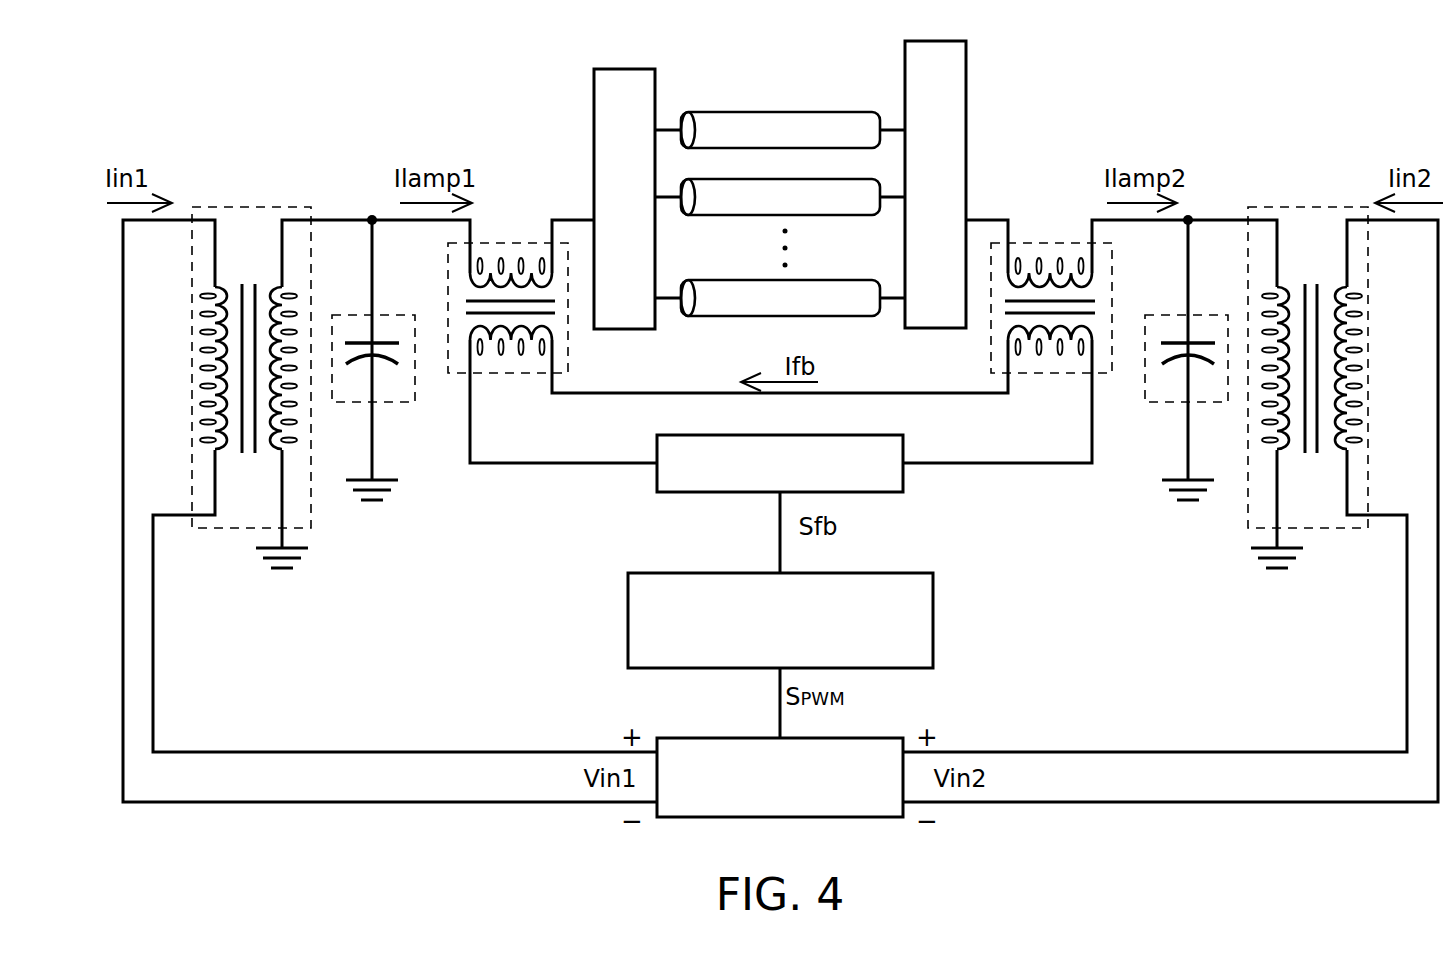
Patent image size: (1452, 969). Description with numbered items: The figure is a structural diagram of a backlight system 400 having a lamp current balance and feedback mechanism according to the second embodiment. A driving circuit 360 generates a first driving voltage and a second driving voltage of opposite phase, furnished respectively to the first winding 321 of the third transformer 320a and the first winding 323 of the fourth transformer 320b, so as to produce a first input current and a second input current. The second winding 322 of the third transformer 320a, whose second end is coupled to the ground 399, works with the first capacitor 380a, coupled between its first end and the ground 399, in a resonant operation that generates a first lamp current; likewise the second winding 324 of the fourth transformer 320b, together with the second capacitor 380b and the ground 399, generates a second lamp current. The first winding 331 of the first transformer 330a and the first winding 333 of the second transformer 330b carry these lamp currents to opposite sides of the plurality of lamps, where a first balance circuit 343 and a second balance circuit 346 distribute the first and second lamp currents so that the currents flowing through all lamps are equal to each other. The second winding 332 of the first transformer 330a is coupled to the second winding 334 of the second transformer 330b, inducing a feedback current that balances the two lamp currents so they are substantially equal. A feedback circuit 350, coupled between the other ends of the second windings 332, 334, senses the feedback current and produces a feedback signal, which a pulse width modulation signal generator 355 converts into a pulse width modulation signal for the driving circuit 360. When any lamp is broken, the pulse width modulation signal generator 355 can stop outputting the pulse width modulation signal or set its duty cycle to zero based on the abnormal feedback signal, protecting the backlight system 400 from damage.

The backlight system 400 is at (1222, 103).
The third transformer 320a is at (252, 351).
The fourth transformer 320b is at (1307, 349).
The first winding of third transformer 321 is at (213, 430).
The second winding of third transformer 322 is at (284, 430).
The first winding of fourth transformer 323 is at (1349, 430).
The second winding of fourth transformer 324 is at (1275, 430).
The first transformer 330a is at (544, 309).
The second transformer 330b is at (1015, 309).
The first winding of first transformer 331 is at (520, 258).
The second winding of first transformer 332 is at (520, 357).
The first winding of second transformer 333 is at (1058, 258).
The second winding of second transformer 334 is at (1058, 357).
The first balance circuit 343 is at (594, 116).
The second balance circuit 346 is at (967, 93).
The feedback circuit 350 is at (880, 435).
The pulse width modulation signal generator 355 is at (880, 573).
The driving circuit 360 is at (880, 738).
The first capacitor 380a is at (414, 385).
The second capacitor 380b is at (1146, 385).
The ground 399 is at (305, 562).